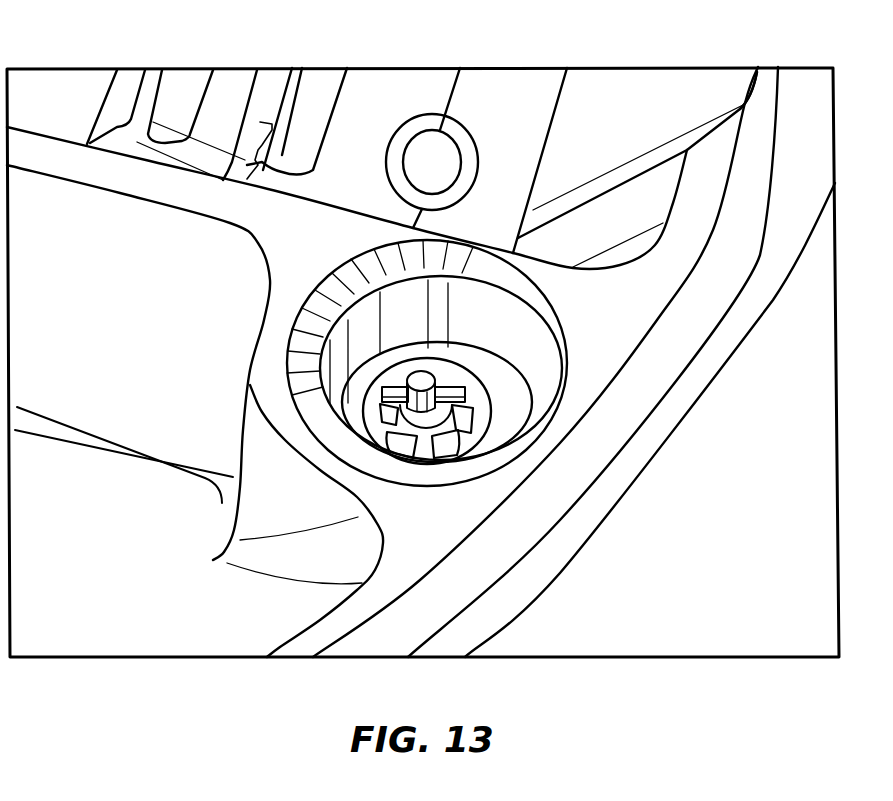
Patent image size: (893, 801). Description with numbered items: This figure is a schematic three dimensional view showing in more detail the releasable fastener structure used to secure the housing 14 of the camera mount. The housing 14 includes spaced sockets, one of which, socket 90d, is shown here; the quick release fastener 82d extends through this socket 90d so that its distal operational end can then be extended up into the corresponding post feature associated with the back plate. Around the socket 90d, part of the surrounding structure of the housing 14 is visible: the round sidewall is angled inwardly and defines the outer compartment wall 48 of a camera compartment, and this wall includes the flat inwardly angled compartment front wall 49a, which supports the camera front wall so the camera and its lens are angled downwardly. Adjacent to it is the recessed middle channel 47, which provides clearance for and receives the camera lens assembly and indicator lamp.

The housing 14 is at (642, 455).
The recessed middle channel 47 is at (715, 87).
The outer compartment wall 48 is at (726, 187).
The flat inwardly angled compartment front wall 49a is at (597, 225).
The quick release fastener 82d is at (408, 382).
The socket 90d is at (479, 372).